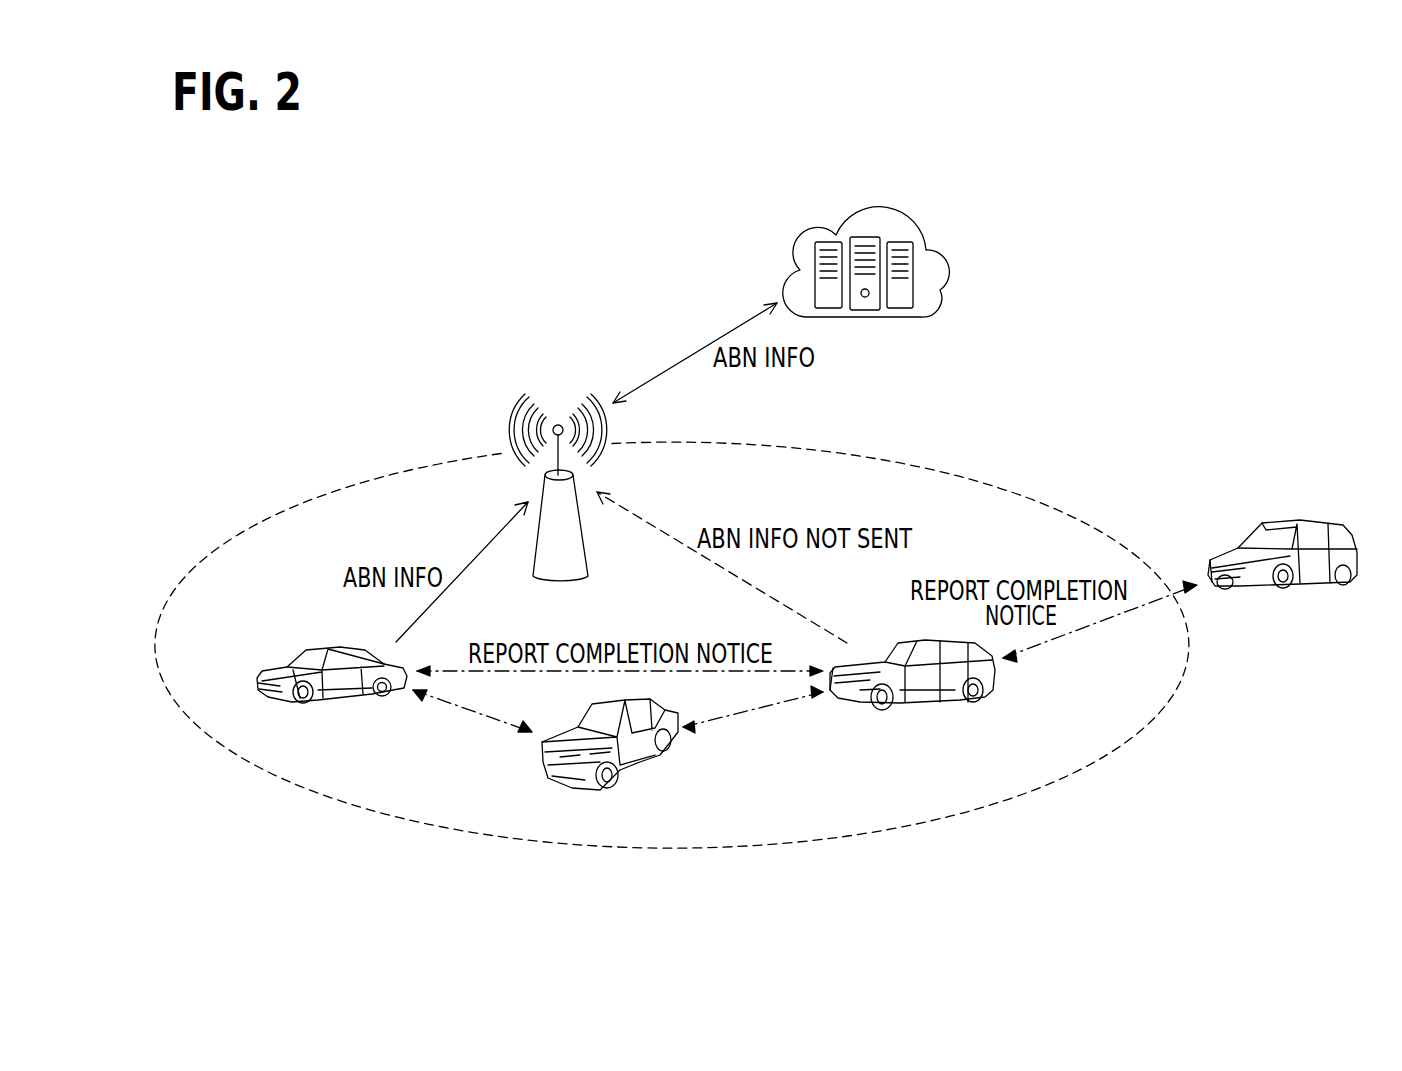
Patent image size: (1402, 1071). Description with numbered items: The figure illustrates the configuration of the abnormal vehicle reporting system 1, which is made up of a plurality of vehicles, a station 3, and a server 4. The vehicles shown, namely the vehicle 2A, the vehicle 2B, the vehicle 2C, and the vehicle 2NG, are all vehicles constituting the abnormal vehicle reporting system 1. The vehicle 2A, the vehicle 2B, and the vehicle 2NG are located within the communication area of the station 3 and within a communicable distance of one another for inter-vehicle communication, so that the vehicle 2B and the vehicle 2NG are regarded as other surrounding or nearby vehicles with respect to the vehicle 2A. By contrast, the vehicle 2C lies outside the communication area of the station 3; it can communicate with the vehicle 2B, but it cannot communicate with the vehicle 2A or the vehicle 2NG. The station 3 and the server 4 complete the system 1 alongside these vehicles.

The abnormal vehicle reporting system 1 is at (1190, 277).
The vehicle 2A is at (328, 697).
The vehicle 2B is at (965, 708).
The vehicle 2C is at (1307, 522).
The vehicle 2NG is at (637, 768).
The station 3 is at (590, 392).
The server 4 is at (911, 214).